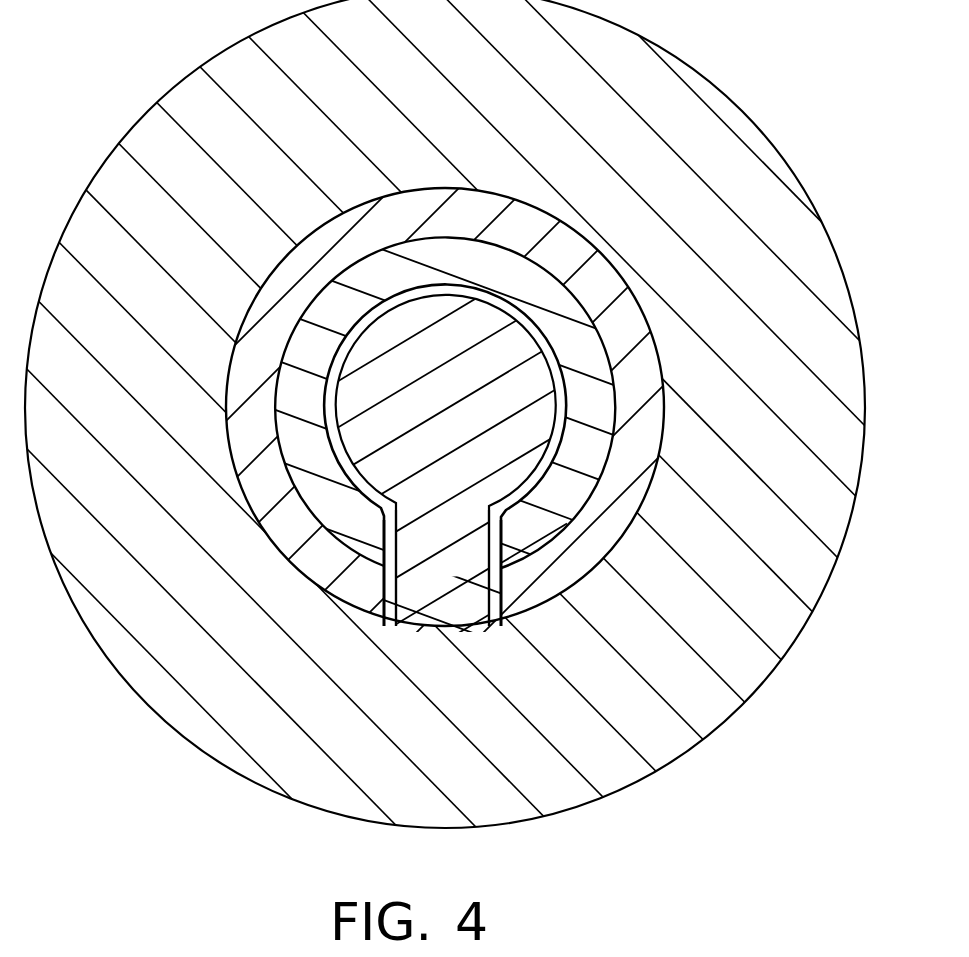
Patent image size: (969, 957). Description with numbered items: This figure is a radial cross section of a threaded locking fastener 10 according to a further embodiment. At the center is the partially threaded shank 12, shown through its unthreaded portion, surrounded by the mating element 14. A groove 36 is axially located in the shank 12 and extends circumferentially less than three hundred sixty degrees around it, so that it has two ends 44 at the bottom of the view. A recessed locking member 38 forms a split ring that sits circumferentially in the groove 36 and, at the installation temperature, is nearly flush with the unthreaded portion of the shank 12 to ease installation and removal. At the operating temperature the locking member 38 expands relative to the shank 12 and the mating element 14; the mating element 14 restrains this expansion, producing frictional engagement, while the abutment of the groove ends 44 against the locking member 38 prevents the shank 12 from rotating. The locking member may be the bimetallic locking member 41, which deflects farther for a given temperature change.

The tube assembly 10 is at (484, 478).
The partially threaded shank 12 is at (454, 408).
The mating element 14 is at (158, 295).
The groove 36 is at (647, 322).
The locking member 38 is at (563, 251).
The bimetallic locking member 41 is at (454, 467).
The groove ends 44 is at (386, 620).